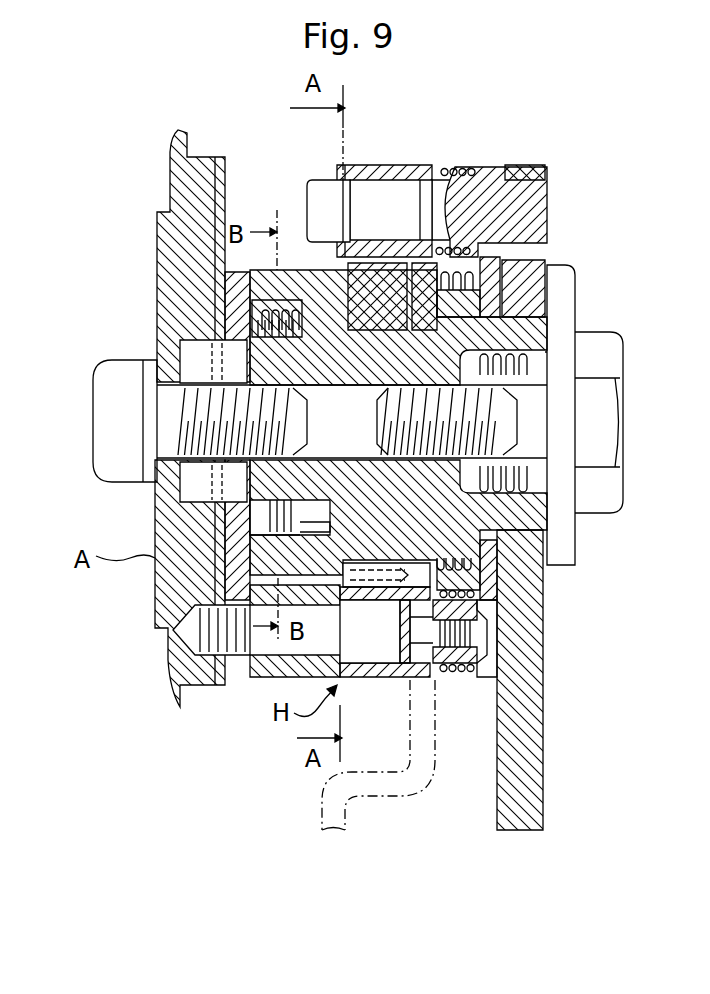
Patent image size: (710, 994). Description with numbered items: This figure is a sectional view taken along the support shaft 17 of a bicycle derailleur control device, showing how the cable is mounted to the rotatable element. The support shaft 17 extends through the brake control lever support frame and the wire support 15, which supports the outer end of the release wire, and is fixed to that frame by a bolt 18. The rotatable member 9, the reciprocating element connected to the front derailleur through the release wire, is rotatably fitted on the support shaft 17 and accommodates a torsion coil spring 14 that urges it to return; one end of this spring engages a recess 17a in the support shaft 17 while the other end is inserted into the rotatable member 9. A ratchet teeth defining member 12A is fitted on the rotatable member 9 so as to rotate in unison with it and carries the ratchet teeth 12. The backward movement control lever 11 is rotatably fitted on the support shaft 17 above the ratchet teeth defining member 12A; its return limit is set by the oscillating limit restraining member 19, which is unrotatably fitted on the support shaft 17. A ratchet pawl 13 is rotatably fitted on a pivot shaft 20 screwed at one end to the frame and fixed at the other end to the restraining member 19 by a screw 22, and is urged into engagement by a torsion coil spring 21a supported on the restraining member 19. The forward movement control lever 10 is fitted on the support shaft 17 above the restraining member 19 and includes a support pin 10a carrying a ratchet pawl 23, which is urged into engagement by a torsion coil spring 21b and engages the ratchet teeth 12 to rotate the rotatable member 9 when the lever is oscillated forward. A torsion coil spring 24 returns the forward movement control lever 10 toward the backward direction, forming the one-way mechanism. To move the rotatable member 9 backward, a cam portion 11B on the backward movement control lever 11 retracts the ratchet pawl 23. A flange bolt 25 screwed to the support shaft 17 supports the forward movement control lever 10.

The rotatable member 9 is at (300, 262).
The forward movement control lever 10 is at (540, 775).
The support pin 10a is at (323, 182).
The backward movement control lever 11 is at (318, 800).
The cam portion 11B is at (420, 247).
The ratchet teeth 12 is at (357, 605).
The ratchet teeth defining member 12A is at (375, 335).
The ratchet pawl 13 is at (366, 680).
The torsion coil spring 14 is at (273, 307).
The wire support 15 is at (224, 177).
The support shaft 17 is at (545, 510).
The recess 17a is at (245, 486).
The bolt 18 is at (102, 368).
The oscillating limit restraining member 19 is at (468, 680).
The pivot shaft 20 is at (386, 680).
The torsion coil spring 21a is at (447, 680).
The torsion coil spring 21b is at (465, 170).
The screw 22 is at (487, 648).
The ratchet pawl 23 is at (388, 165).
The torsion coil spring 24 is at (545, 350).
The flange bolt 25 is at (622, 418).